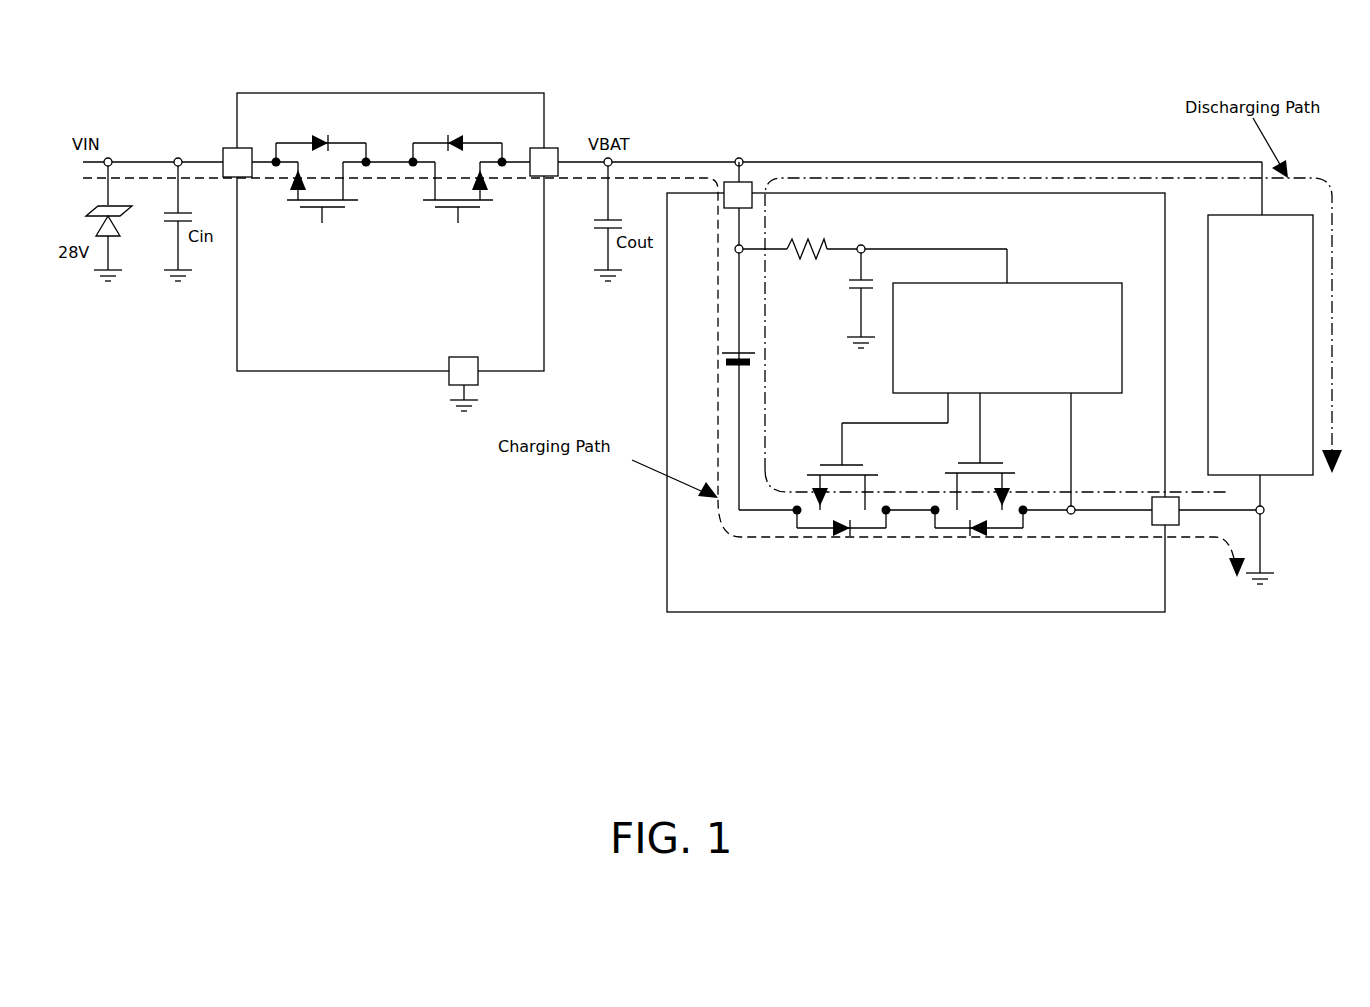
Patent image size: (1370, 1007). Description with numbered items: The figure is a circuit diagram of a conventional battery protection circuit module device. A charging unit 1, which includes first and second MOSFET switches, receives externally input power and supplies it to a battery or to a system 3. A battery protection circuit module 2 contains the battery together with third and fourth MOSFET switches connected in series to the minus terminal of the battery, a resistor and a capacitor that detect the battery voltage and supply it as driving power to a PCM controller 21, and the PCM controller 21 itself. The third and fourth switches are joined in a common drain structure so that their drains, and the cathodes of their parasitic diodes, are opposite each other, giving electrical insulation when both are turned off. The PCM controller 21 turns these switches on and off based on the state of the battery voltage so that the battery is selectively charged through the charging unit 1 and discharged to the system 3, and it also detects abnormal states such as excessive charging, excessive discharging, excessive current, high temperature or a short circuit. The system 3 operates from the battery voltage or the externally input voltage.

The charging unit 1 is at (385, 106).
The battery protection circuit module 2 is at (948, 404).
The system 3 is at (1225, 245).
The PCM controller 21 is at (1057, 295).